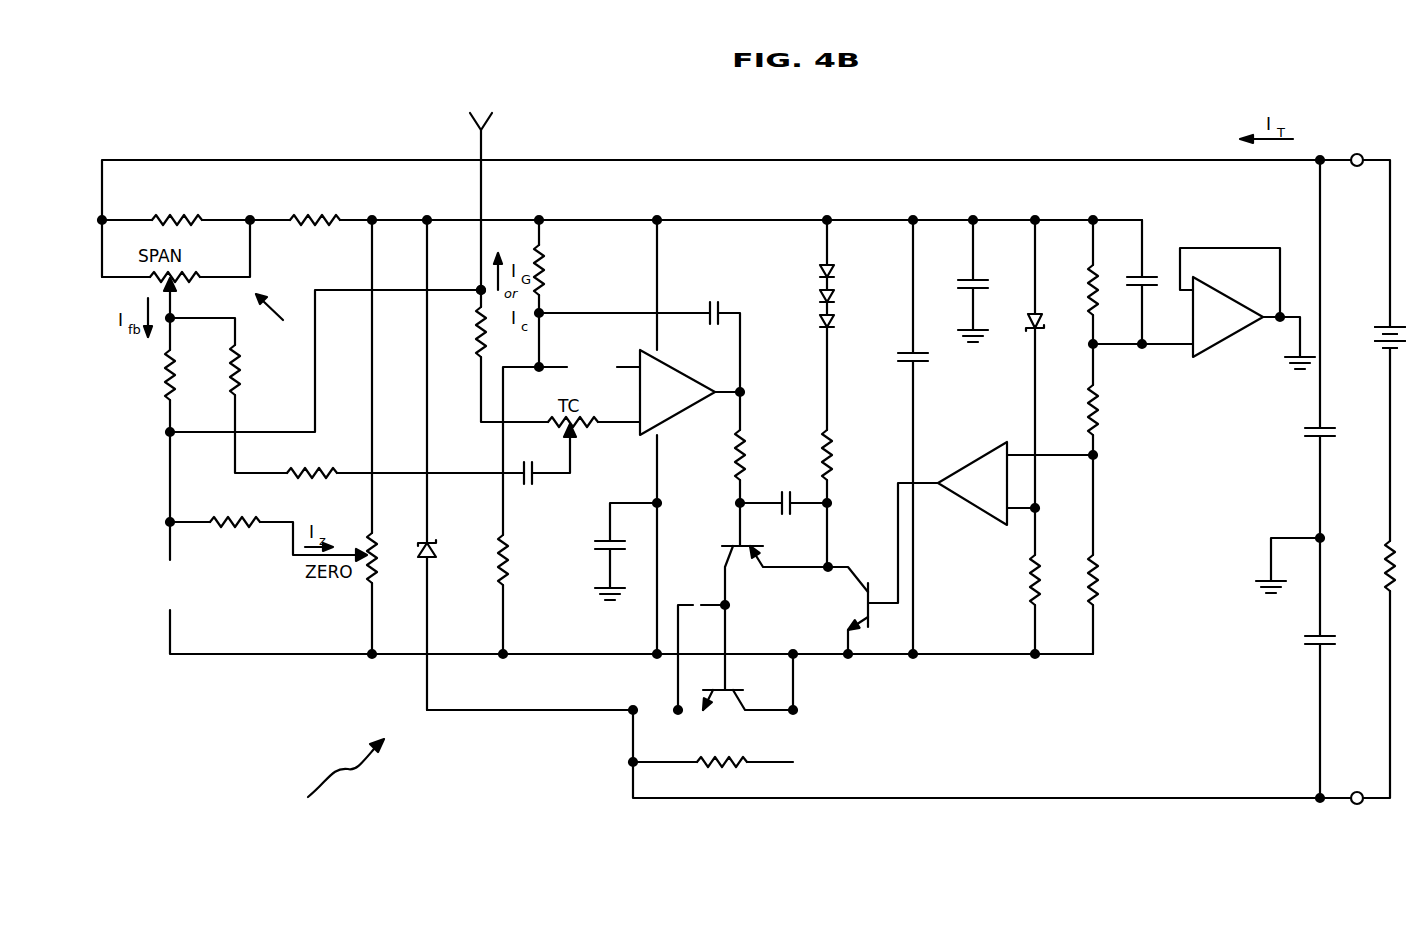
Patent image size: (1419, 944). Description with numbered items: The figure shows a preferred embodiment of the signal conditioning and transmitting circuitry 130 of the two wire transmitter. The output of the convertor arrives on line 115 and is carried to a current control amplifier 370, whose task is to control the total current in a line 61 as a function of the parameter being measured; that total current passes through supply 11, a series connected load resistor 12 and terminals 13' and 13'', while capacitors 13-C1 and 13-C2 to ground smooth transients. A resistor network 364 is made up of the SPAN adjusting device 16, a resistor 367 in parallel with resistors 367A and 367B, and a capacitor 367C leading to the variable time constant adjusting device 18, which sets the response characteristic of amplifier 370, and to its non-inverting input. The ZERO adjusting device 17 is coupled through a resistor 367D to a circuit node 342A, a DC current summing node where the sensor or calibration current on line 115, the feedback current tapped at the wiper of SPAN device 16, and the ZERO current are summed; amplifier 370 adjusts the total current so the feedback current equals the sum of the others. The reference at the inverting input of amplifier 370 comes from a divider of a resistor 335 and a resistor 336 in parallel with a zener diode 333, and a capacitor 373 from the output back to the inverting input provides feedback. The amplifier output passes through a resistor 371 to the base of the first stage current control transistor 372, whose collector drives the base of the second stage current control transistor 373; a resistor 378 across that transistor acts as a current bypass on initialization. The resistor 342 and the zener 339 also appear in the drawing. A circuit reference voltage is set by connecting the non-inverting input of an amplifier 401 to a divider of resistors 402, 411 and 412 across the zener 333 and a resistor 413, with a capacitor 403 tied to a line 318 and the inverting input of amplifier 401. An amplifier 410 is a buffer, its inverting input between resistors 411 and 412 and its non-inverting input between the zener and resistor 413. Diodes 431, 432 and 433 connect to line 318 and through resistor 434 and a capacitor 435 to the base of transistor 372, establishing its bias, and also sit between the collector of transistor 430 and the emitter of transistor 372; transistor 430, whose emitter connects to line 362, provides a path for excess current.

The line 115 is at (484, 143).
The SPAN adjusting device 16 is at (212, 266).
The resistor network 364 is at (280, 321).
The resistor 367 is at (162, 378).
The resistor 367A is at (244, 383).
The resistor 367B is at (304, 448).
The capacitor 367C is at (538, 478).
The resistor 367D is at (233, 532).
The circuit node 342A is at (477, 292).
The resistor 342 is at (477, 350).
The resistor 335 is at (546, 276).
The capacitor / second stage current control transistor 373 is at (726, 296).
The current control amplifier 370 is at (683, 368).
The resistor 371 is at (728, 446).
The first stage current control transistor 372 is at (750, 554).
The transistor 430 is at (852, 608).
The resistor 336 is at (510, 562).
The zener diode 339 is at (436, 540).
The ZERO adjusting device 17 is at (378, 577).
The variable time constant adjusting device 18 is at (588, 412).
The line 318 is at (868, 216).
The diode 431 is at (836, 270).
The diode 432 is at (836, 296).
The diode 433 is at (836, 320).
The resistor 434 is at (836, 438).
The capacitor 435 is at (783, 490).
The zener diode 333 is at (1024, 338).
The resistor 402 is at (1086, 290).
The capacitor 403 is at (1150, 272).
The amplifier 401 is at (1213, 283).
The amplifier 410 is at (967, 508).
The resistor 411 is at (1100, 422).
The resistor 412 is at (1100, 585).
The resistor 413 is at (1028, 586).
The line 61 is at (1110, 158).
The supply 11 is at (1376, 334).
The load resistor 12 is at (1384, 562).
The terminal 13' is at (1372, 131).
The terminal 13'' is at (1374, 817).
The capacitor 13-C1 is at (1304, 432).
The capacitor 13-C2 is at (1304, 642).
The line 362 is at (960, 656).
The resistor 378 is at (728, 772).
The signal conditioning and transmitting circuitry 130 is at (332, 782).